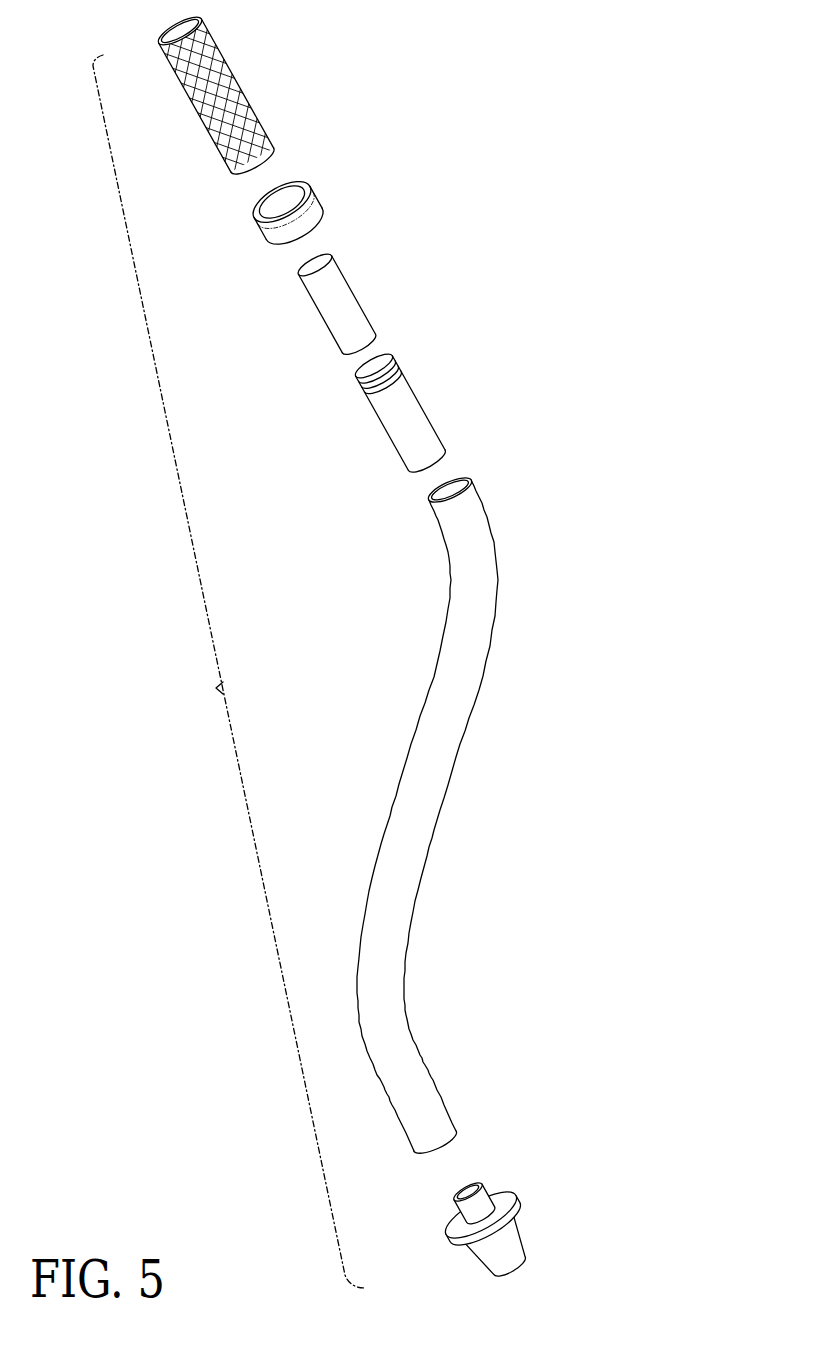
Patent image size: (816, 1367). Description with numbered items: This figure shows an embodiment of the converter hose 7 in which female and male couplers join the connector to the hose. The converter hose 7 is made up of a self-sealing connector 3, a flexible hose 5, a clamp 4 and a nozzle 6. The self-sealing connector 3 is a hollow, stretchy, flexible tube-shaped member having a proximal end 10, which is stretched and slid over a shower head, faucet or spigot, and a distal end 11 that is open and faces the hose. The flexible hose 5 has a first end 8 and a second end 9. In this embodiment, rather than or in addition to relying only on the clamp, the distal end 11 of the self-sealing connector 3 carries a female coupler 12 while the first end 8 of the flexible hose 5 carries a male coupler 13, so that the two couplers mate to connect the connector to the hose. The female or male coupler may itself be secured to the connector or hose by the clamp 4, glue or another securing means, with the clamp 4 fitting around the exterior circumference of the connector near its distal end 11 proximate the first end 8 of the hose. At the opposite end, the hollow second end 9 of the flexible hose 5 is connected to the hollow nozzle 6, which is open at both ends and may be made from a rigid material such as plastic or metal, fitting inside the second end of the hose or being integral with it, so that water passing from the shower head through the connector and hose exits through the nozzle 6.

The self-sealing connector 3 is at (243, 88).
The clamp 4 is at (313, 192).
The flexible hose 5 is at (440, 822).
The nozzle 6 is at (518, 1229).
The converter hose 7 is at (229, 671).
The first end 8 is at (427, 488).
The second end 9 is at (455, 1150).
The proximal end 10 is at (172, 26).
The distal end 11 is at (270, 152).
The female coupler 12 is at (358, 292).
The male coupler 13 is at (424, 398).